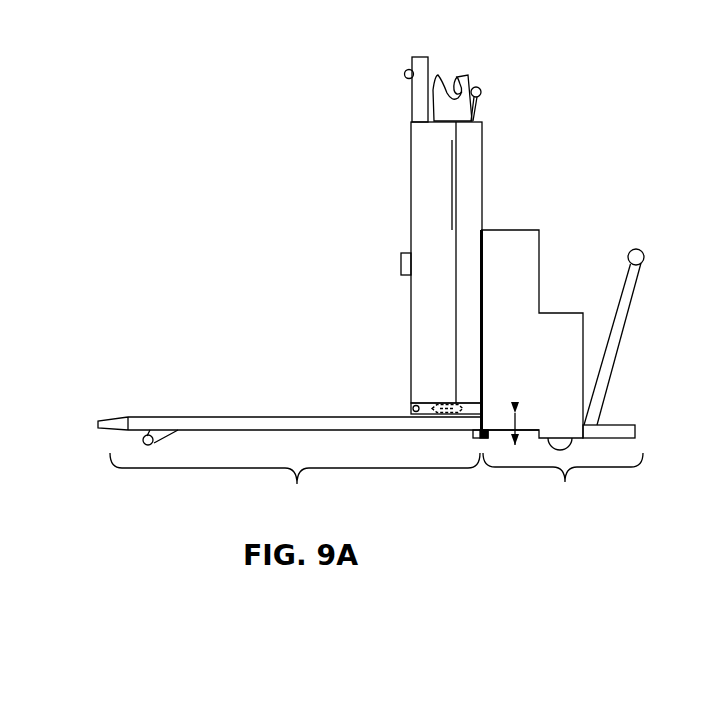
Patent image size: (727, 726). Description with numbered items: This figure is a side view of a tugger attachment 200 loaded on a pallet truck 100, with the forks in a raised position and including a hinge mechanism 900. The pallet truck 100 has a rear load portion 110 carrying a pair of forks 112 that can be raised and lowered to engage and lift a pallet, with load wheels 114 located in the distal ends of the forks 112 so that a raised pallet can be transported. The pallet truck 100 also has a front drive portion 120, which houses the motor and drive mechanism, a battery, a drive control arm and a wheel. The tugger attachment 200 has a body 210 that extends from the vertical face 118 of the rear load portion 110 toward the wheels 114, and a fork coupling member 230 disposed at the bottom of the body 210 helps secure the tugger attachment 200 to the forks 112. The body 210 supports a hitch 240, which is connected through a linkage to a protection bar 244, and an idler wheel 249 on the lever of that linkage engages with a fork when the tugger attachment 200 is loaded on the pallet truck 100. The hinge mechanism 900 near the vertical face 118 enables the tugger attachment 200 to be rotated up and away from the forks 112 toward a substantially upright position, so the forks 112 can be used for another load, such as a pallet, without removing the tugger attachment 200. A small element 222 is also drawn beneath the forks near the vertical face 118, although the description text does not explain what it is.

The pallet truck 100 is at (519, 210).
The rear load portion 110 is at (283, 463).
The forks 112 is at (210, 438).
The load wheels 114 is at (133, 448).
The vertical face 118 is at (480, 272).
The front drive portion 120 is at (563, 378).
The tugger attachment 200 is at (367, 238).
The body 210 is at (423, 314).
The stop block 222 is at (470, 442).
The fork coupling member 230 is at (380, 268).
The hitch 240 is at (493, 88).
The protection bar 244 is at (412, 62).
The idler wheel 249 is at (397, 82).
The hinge mechanism 900 is at (395, 403).